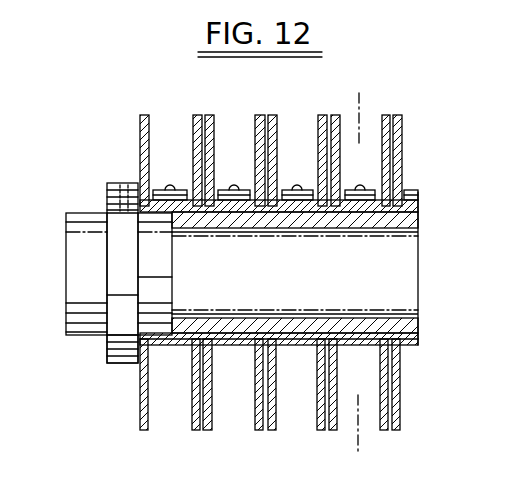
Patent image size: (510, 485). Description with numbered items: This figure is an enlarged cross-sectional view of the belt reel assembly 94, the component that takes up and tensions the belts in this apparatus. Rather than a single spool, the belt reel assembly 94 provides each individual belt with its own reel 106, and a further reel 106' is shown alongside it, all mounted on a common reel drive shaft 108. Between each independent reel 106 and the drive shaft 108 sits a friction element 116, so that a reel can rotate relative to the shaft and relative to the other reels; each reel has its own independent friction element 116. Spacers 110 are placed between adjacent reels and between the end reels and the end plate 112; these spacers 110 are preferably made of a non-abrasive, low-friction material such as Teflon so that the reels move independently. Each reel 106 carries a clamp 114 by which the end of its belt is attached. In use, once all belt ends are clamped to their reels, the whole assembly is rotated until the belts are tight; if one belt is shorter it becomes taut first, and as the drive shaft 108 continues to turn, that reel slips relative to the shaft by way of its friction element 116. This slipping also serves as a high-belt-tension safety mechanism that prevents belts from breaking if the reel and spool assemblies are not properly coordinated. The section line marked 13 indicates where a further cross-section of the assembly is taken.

The belt reel assembly 94 is at (117, 387).
The reel 106 is at (244, 298).
The fin 106' is at (199, 298).
The reel drive shaft 108 is at (398, 318).
The spacer 110 is at (142, 187).
The end plate 112 is at (106, 360).
The clamp 114 is at (157, 186).
The friction element 116 is at (418, 205).
The section line 13- 13 is at (359, 102).